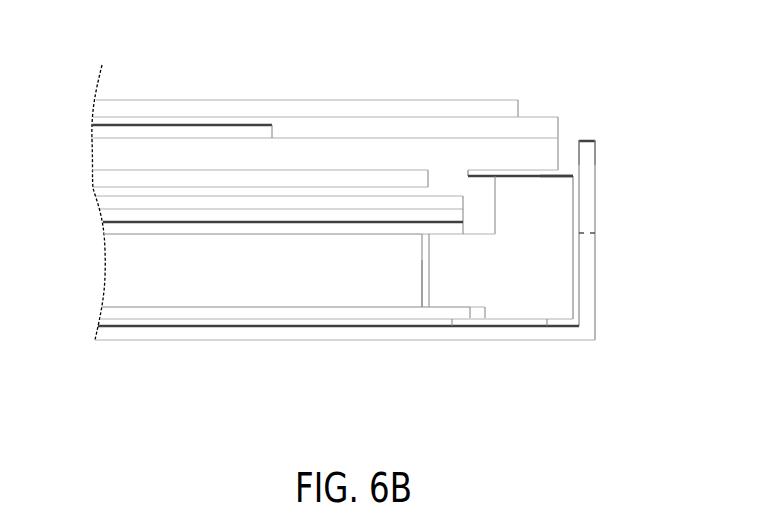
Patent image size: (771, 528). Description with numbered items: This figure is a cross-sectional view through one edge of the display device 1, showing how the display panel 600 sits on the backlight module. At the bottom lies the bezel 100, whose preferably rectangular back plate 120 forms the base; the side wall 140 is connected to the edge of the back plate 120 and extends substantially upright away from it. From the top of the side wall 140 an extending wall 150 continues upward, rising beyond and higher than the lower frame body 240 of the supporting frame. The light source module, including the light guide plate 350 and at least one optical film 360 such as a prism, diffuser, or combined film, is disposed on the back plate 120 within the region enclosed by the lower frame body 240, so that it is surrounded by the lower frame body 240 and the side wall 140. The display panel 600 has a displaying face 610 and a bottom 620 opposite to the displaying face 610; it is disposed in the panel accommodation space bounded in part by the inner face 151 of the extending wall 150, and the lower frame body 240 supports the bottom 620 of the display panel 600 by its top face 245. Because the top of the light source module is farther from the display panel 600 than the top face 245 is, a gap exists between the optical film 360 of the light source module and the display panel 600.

The display device 1 is at (93, 44).
The bezel 100 is at (408, 238).
The back plate 120 is at (381, 357).
The side wall 140 is at (588, 308).
The extending wall 150 is at (588, 195).
The inner face 151 is at (578, 152).
The lower frame body 240 is at (566, 186).
The top face 245 is at (562, 175).
The light guide plate 350 is at (112, 272).
The optical film 360 is at (104, 220).
The display panel 600 is at (538, 128).
The displaying face 610 is at (480, 100).
The bottom 620 is at (395, 187).